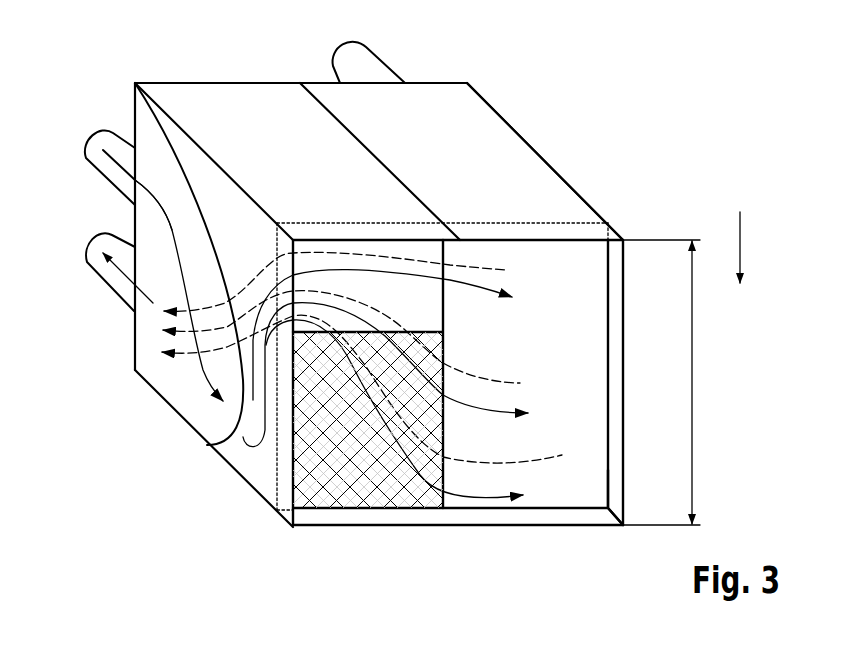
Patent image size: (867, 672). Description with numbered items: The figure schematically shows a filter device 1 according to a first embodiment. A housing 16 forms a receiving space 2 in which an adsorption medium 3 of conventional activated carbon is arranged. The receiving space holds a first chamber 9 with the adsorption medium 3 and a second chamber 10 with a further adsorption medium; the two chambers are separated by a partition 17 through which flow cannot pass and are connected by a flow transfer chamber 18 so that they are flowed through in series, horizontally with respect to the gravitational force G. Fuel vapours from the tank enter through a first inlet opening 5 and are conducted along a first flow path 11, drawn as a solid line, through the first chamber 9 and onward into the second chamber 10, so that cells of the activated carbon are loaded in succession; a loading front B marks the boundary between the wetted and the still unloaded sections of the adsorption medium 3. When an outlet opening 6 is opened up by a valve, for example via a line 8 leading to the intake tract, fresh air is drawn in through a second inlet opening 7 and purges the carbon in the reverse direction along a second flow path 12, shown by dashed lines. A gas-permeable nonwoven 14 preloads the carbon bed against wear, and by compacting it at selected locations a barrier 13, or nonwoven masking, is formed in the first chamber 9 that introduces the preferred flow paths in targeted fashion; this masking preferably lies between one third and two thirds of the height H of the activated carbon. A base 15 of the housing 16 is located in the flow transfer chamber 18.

The filter device 1 is at (600, 126).
The receiving space 2 is at (410, 510).
The adsorption medium 3 is at (410, 315).
The first inlet opening 5 is at (125, 130).
The outlet opening 6 is at (129, 321).
The second inlet opening 7 is at (409, 74).
The line 8 is at (96, 265).
The first chamber 9 is at (367, 173).
The second chamber 10 is at (535, 172).
The first flow path 11 is at (170, 222).
The second flow path 12 is at (183, 360).
The barrier 13 is at (333, 485).
The nonwoven 14 is at (376, 455).
The base 15 is at (586, 502).
The housing 16 is at (488, 100).
The partition 17 is at (478, 223).
The flow transfer chamber 18 is at (584, 222).
The loading front B is at (186, 175).
The gravitational force G is at (742, 247).
The height H is at (694, 388).